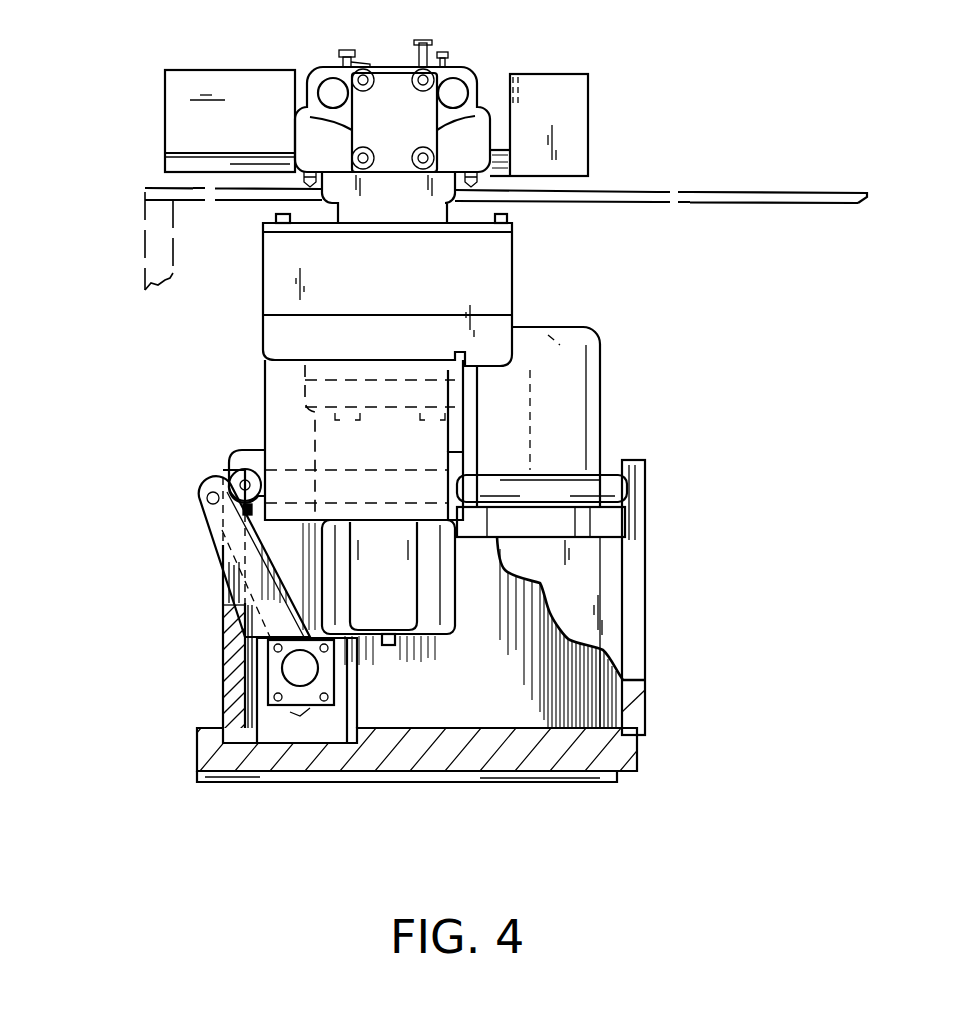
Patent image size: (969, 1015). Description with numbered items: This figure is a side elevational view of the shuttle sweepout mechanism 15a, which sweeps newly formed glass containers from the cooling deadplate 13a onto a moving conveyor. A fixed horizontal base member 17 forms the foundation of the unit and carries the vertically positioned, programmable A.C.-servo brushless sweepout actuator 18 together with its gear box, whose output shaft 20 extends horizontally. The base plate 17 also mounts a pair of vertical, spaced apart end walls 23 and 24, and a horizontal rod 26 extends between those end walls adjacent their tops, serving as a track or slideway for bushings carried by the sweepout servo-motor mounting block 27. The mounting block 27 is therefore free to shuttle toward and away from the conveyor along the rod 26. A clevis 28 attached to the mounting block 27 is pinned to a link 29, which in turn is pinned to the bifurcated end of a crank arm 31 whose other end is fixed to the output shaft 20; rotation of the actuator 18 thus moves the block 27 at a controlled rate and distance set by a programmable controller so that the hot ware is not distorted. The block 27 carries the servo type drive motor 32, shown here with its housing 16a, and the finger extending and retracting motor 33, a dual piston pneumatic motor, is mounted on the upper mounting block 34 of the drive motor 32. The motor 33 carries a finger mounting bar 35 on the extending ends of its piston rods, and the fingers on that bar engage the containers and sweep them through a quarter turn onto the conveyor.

The finger extending and retracting motor 33 is at (393, 102).
The finger mounting bar 35 is at (180, 156).
The upper mounting block 34 is at (440, 210).
The cooling deadplate 13a is at (147, 190).
The motor housing 16a is at (252, 306).
The mounting block 27 is at (282, 390).
The clevis 28 is at (263, 448).
The link 29 is at (232, 481).
The crank arm 31 is at (212, 527).
The sweepout actuator 18 is at (583, 420).
The horizontal rod 26 is at (565, 490).
The sweepout mechanism 15a is at (672, 578).
The end wall 23 is at (232, 640).
The output shaft 20 is at (297, 668).
The drive motor 32 is at (395, 606).
The end wall 24 is at (628, 670).
The base member 17 is at (347, 757).